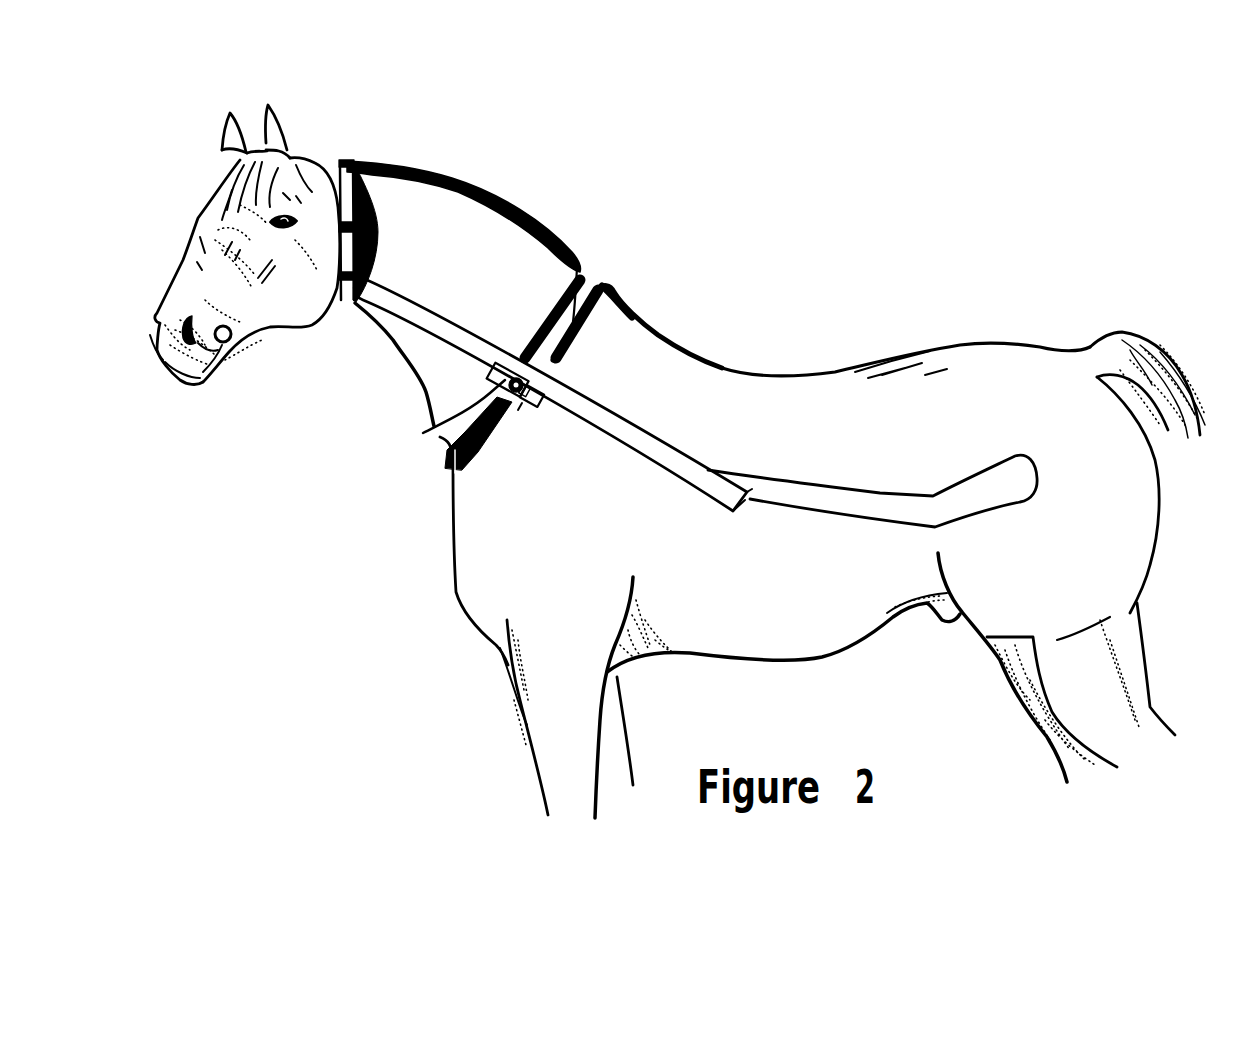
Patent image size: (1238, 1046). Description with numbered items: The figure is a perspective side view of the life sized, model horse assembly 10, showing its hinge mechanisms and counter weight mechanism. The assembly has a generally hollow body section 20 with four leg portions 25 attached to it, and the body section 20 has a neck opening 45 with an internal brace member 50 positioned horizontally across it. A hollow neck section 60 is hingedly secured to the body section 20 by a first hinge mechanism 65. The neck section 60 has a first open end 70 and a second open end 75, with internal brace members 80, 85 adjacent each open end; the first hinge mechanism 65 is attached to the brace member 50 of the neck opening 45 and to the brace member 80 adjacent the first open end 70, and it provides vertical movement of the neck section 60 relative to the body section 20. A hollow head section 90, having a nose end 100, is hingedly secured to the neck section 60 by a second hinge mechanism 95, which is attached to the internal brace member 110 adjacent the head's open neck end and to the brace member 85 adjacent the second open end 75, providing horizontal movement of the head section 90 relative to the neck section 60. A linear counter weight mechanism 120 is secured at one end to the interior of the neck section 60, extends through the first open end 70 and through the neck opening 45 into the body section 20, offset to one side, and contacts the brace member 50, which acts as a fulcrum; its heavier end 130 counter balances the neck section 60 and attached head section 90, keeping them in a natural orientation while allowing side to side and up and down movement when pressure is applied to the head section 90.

The life sized, model horse assembly 10 is at (706, 249).
The hollow body section 20 is at (823, 403).
The leg portion 25 is at (549, 737).
The neck opening 45 is at (575, 322).
The internal brace member 50 is at (527, 403).
The hollow neck section 60 is at (409, 230).
The first hinge mechanism 65 is at (490, 394).
The first open end 70 is at (578, 284).
The second open end 75 is at (361, 206).
The internal brace member 80 is at (503, 377).
The internal brace member 85 is at (333, 160).
The hollow head section 90 is at (204, 261).
The second hinge mechanism 95 is at (347, 306).
The nose end 100 is at (165, 357).
The internal brace member 110 is at (346, 160).
The counter weight mechanism 120 is at (641, 418).
The heavier end 130 is at (1027, 538).